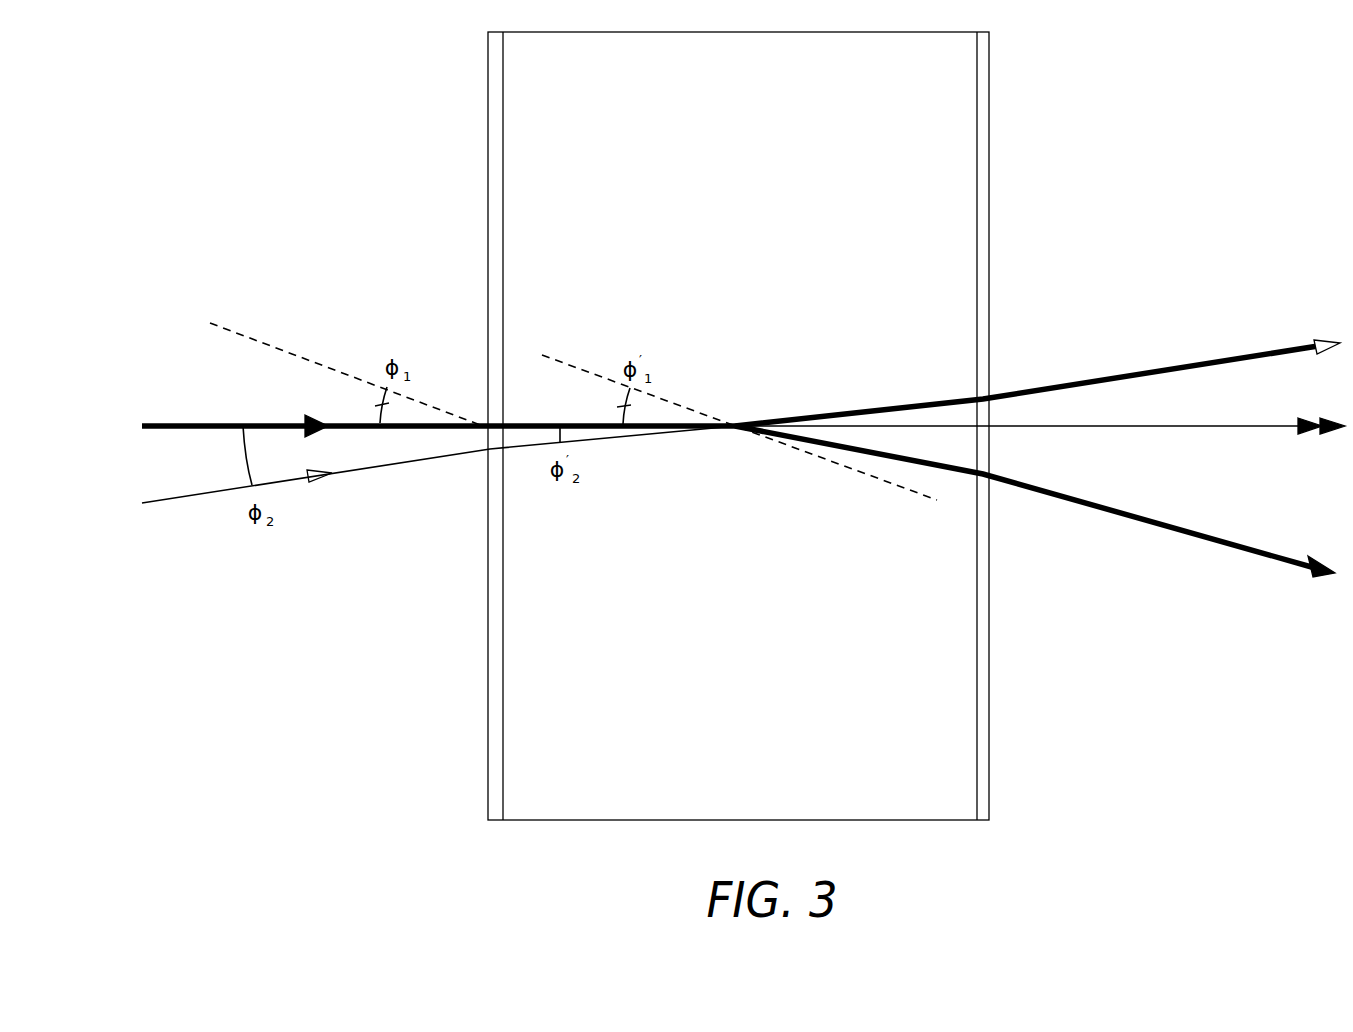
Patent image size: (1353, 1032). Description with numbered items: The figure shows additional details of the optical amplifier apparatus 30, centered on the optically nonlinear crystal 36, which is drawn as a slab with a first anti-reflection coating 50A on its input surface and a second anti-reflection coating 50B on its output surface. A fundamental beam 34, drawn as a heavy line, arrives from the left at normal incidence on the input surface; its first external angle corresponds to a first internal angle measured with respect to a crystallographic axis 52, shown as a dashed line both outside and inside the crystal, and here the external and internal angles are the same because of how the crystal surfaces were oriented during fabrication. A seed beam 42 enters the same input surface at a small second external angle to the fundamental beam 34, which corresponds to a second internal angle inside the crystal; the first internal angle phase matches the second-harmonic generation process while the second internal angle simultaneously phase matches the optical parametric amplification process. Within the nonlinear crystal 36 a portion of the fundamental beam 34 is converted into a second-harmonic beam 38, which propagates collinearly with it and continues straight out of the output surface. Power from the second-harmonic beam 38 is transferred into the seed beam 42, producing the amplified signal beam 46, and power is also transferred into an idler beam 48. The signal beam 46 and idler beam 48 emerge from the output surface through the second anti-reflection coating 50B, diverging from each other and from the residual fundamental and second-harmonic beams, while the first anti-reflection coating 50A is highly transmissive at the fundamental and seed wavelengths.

The optical amplifier apparatus 30 is at (272, 128).
The fundamental beam 34 is at (438, 414).
The optically nonlinear crystal 36 is at (726, 179).
The second-harmonic beam 38 is at (1040, 440).
The seed beam 42 is at (438, 483).
The signal beam 46 is at (1037, 375).
The idler beam 48 is at (1035, 507).
The first anti-reflection coating 50A is at (488, 165).
The second anti-reflection coating 50B is at (983, 140).
The crystallographic axis 52 is at (573, 399).